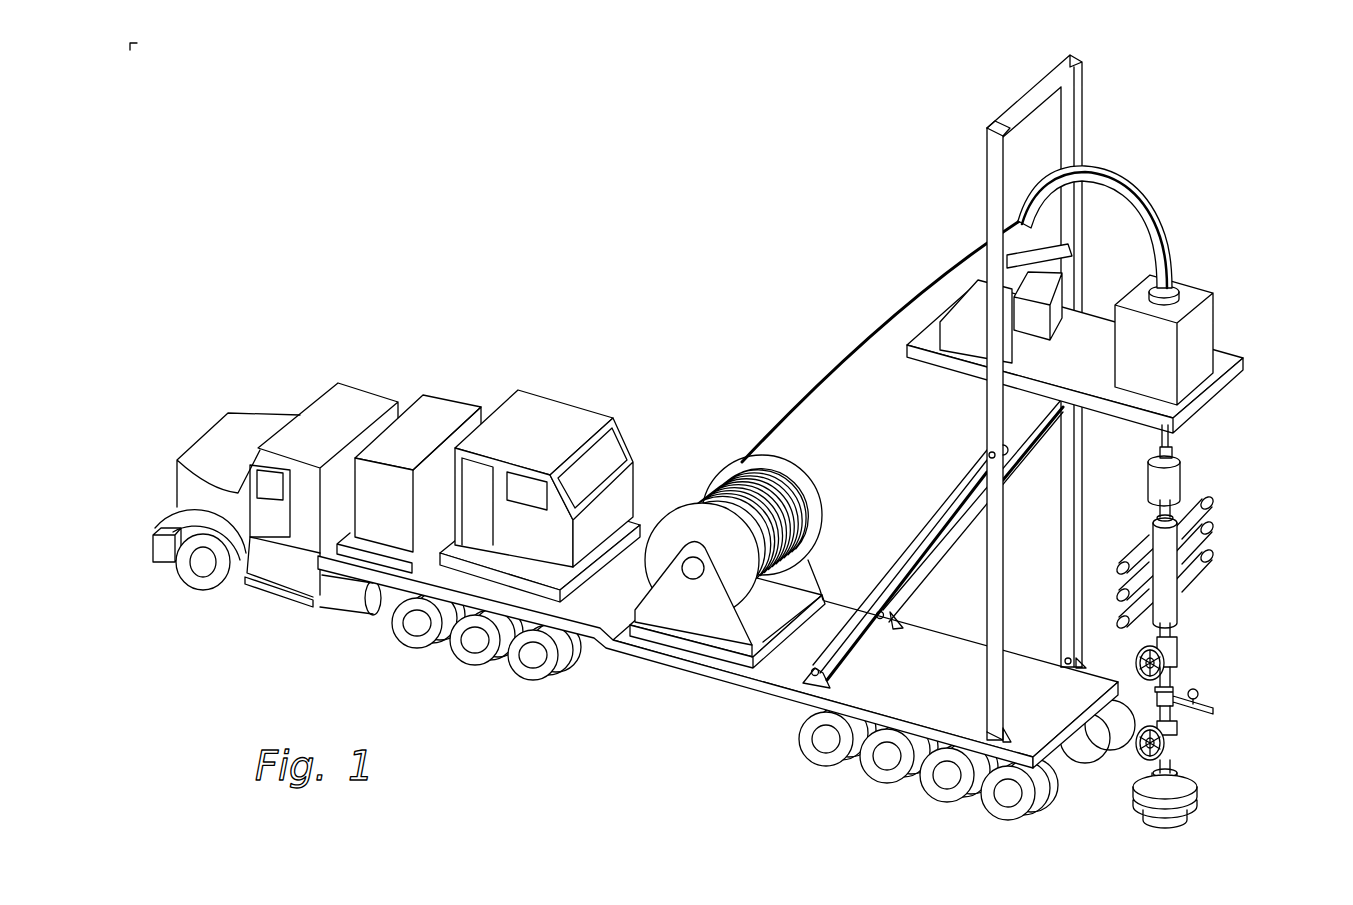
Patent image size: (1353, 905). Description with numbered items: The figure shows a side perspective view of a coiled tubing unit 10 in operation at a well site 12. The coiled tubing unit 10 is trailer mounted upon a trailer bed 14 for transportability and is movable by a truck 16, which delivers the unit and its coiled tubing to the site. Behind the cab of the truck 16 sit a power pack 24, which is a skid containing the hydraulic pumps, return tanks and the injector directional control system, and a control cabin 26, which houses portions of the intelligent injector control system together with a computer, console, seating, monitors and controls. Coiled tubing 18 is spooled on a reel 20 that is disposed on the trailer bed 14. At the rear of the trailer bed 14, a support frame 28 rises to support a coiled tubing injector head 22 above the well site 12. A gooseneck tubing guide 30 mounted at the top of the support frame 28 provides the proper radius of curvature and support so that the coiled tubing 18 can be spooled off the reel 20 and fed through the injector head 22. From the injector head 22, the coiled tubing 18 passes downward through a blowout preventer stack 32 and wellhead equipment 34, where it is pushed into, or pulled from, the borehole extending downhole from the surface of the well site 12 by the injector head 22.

The coiled tubing unit 10 is at (612, 203).
The well site 12 is at (1228, 772).
The trailer bed 14 is at (693, 670).
The truck 16 is at (263, 417).
The coiled tubing 18 is at (845, 362).
The reel 20 is at (797, 470).
The coiled tubing injector head 22 is at (1210, 290).
The power pack 24 is at (447, 410).
The control cabin 26 is at (568, 410).
The support frame 28 is at (1010, 102).
The gooseneck tubing guide 30 is at (1124, 178).
The blowout preventer stack 32 is at (1210, 527).
The wellhead equipment 34 is at (1179, 642).